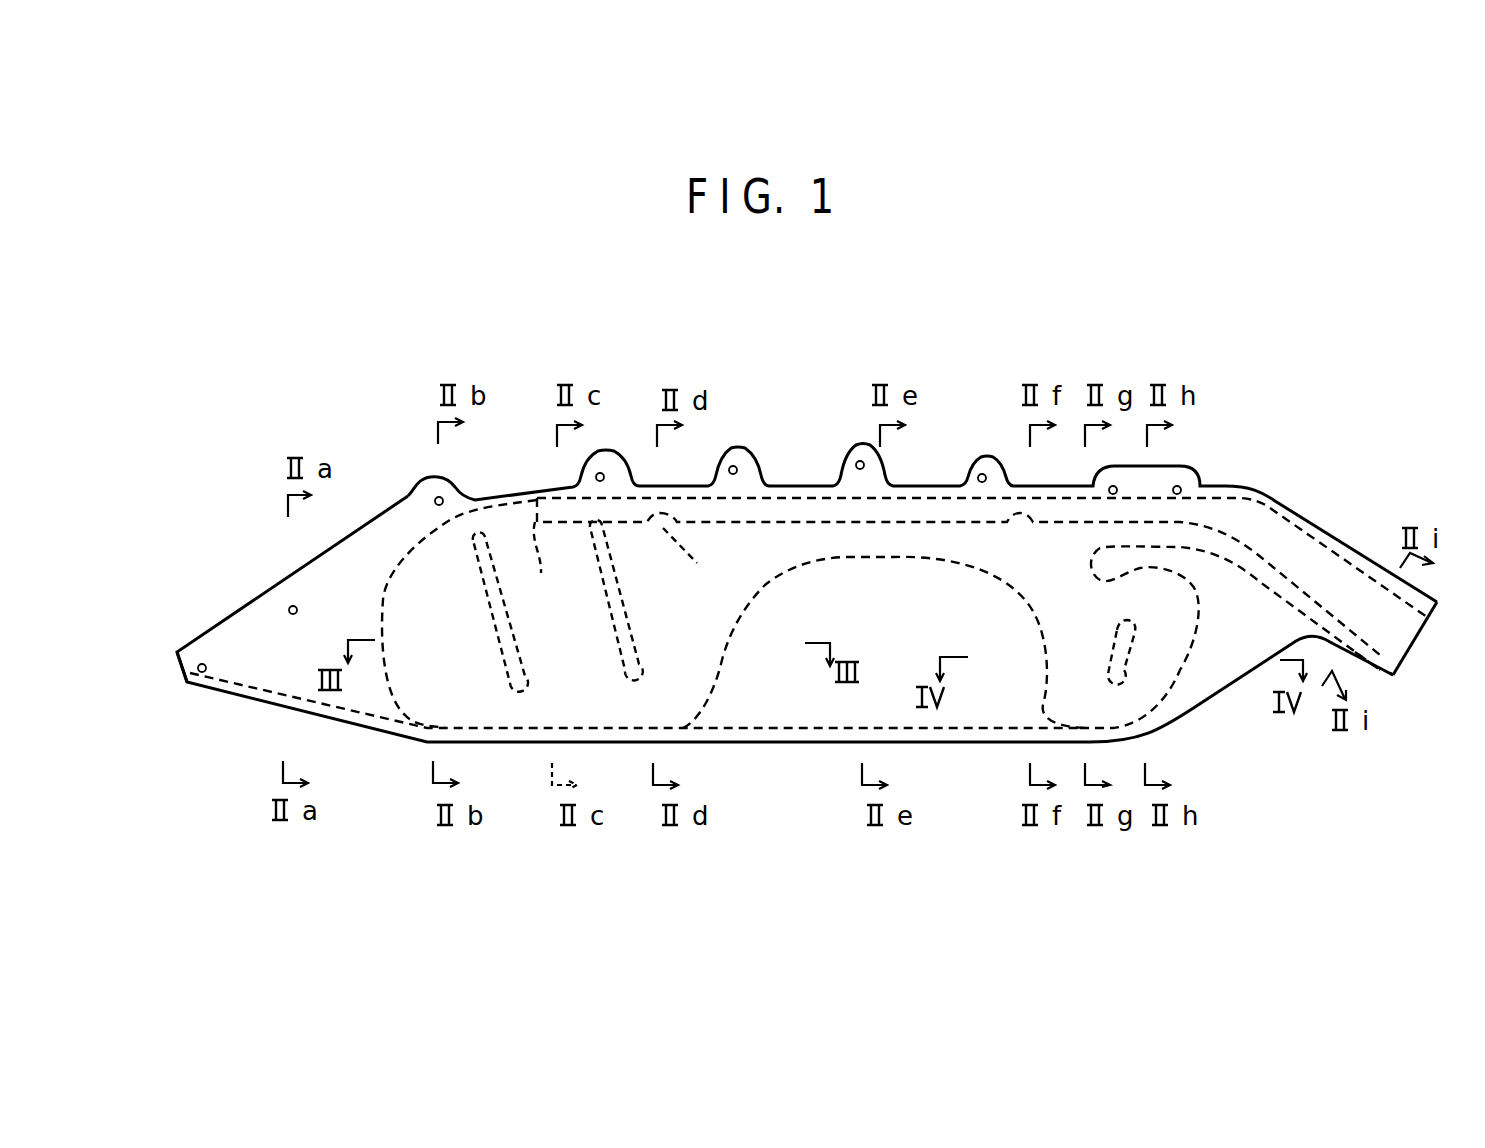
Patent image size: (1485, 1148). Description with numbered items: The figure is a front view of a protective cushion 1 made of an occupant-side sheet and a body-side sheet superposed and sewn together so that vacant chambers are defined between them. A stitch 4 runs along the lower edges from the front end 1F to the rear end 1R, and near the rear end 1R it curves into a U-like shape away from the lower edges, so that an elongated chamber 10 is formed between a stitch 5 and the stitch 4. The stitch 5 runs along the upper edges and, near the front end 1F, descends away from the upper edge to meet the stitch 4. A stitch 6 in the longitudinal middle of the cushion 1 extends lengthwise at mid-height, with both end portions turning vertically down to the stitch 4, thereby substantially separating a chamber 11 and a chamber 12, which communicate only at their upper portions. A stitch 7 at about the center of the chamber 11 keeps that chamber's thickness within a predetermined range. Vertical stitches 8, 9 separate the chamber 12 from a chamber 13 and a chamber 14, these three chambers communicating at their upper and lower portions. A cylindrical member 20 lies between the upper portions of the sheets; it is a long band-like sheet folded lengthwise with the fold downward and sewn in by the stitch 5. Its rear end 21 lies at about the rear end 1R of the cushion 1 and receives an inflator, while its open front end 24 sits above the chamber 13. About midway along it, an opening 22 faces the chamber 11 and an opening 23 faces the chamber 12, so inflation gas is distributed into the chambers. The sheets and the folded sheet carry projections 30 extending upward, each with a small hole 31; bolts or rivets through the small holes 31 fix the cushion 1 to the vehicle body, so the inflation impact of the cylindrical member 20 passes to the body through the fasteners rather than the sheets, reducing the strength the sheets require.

The protective cushion 1 is at (1177, 334).
The front end 1F is at (178, 682).
The rear end 1R is at (1397, 674).
The stitch 4 is at (1268, 585).
The stitch 5 is at (383, 620).
The stitch 6 is at (900, 557).
The stitch 7 is at (1113, 647).
The stitch 8 is at (613, 573).
The stitch 9 is at (483, 567).
The elongated chamber 10 is at (1383, 647).
The chamber 11 is at (1047, 663).
The chamber 12 is at (703, 625).
The chamber 13 is at (577, 650).
The chamber 14 is at (457, 667).
The cylindrical member 20 is at (793, 527).
The rear end 21 is at (1417, 627).
The opening 22 is at (1020, 515).
The opening 23 is at (689, 566).
The open front end 24 is at (538, 568).
The projections 30 is at (1163, 469).
The small holes 31 is at (1180, 488).